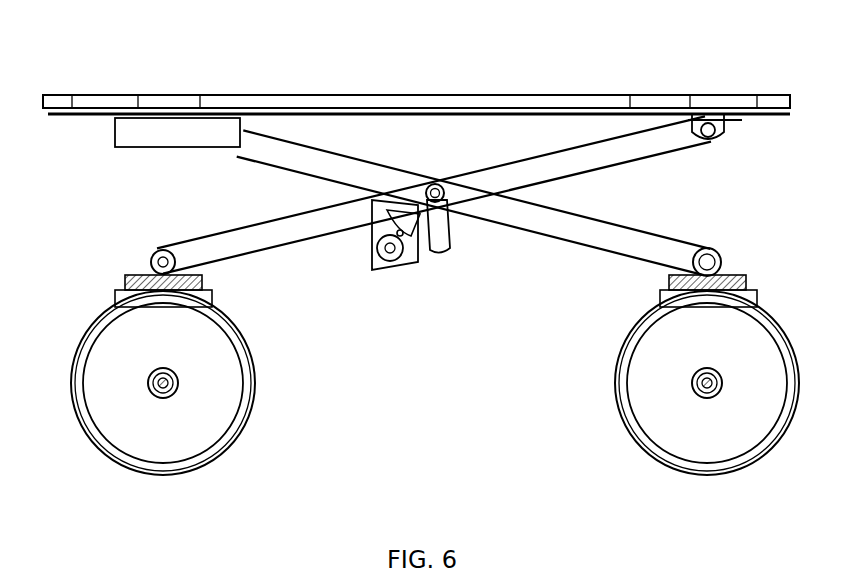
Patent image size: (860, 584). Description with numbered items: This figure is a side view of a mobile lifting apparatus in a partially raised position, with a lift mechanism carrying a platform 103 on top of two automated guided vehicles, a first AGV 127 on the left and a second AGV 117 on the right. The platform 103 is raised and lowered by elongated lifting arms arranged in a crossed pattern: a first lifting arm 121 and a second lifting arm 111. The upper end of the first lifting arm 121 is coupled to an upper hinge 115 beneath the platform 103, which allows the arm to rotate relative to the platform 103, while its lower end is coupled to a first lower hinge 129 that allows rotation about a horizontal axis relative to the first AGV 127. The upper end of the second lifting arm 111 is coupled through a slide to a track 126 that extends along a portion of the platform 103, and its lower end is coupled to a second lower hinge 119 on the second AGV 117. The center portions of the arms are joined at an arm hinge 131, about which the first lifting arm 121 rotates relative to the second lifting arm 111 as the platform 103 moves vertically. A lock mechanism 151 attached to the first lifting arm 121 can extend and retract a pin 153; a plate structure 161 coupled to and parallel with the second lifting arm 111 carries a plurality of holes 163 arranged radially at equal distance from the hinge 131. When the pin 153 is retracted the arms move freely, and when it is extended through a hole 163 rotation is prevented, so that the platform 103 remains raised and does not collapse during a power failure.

The platform 103 is at (404, 100).
The second lifting arm 111 is at (581, 238).
The upper hinge 115 is at (717, 132).
The second AGV 117 is at (767, 325).
The second lower hinge 119 is at (712, 262).
The first lifting arm 121 is at (250, 232).
The track 126 is at (130, 142).
The first AGV 127 is at (98, 345).
The first lower hinge 129 is at (158, 262).
The arm hinge 131 is at (434, 186).
The lock mechanism 151 is at (395, 270).
The pin 153 is at (402, 235).
The plate structure 161 is at (437, 232).
The hole 163 is at (388, 217).